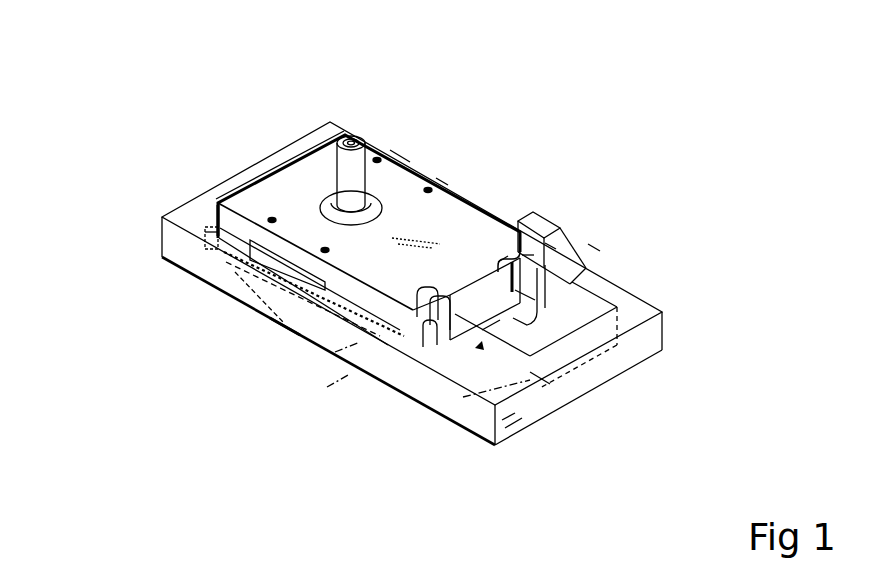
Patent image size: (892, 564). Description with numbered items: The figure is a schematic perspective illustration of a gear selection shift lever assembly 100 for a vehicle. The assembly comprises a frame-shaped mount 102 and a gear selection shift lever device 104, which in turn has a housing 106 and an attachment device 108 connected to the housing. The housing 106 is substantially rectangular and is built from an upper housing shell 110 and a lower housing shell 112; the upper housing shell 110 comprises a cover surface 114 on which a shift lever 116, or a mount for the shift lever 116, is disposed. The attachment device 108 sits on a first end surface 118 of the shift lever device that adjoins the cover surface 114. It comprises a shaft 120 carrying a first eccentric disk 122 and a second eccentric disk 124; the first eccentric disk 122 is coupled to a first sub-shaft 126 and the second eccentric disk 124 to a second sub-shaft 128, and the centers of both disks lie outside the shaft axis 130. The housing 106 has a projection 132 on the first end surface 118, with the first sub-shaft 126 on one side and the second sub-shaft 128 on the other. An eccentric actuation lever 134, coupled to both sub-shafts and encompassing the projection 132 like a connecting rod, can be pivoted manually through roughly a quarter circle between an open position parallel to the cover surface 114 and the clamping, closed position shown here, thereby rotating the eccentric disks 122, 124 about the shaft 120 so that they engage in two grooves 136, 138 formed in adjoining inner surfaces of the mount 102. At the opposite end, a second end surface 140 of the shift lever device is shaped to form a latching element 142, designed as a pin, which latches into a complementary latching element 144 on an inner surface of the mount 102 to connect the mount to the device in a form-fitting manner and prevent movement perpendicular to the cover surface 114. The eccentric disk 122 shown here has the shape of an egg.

The gear selection shift lever assembly 100 is at (167, 116).
The mount 102 is at (607, 292).
The gear selection shift lever device 104 is at (250, 190).
The housing 106 is at (287, 188).
The attachment device 108 is at (592, 242).
The upper housing shell 110 is at (441, 180).
The lower housing shell 112 is at (283, 333).
The cover surface 114 is at (398, 158).
The shift lever 116 is at (328, 135).
The first end surface 118 is at (540, 380).
The shaft 120 is at (558, 245).
The first eccentric disk 122 is at (417, 322).
The second eccentric disk 124 is at (550, 243).
The first sub-shaft 126 is at (487, 335).
The second sub-shaft 128 is at (505, 262).
The shaft axis 130 is at (337, 383).
The projection 132 is at (525, 292).
The eccentric actuation lever 134 is at (493, 320).
The groove 136 is at (353, 353).
The groove 138 is at (528, 255).
The second end surface 140 is at (213, 210).
The latching element 142 is at (208, 232).
The complementary latching element 144 is at (203, 242).